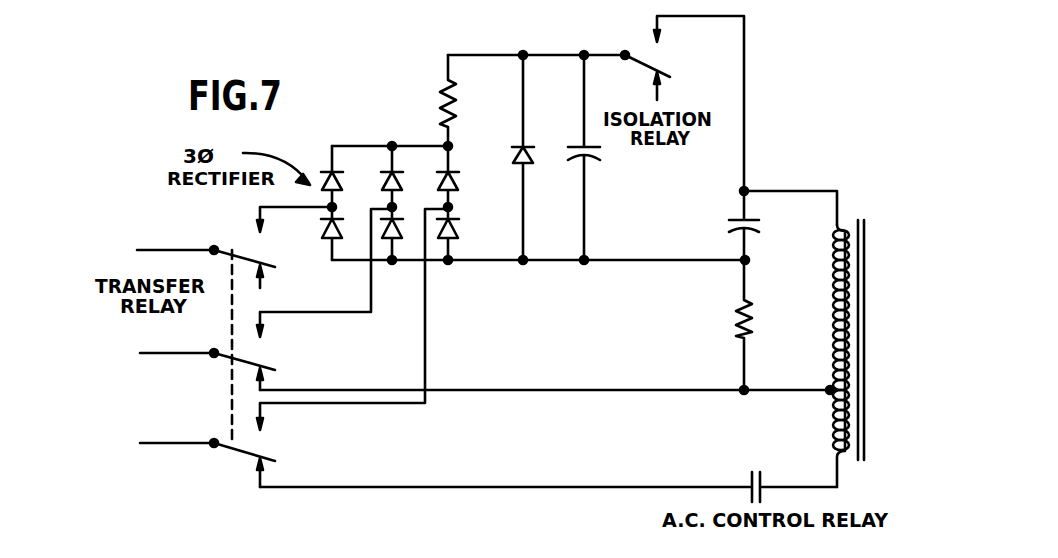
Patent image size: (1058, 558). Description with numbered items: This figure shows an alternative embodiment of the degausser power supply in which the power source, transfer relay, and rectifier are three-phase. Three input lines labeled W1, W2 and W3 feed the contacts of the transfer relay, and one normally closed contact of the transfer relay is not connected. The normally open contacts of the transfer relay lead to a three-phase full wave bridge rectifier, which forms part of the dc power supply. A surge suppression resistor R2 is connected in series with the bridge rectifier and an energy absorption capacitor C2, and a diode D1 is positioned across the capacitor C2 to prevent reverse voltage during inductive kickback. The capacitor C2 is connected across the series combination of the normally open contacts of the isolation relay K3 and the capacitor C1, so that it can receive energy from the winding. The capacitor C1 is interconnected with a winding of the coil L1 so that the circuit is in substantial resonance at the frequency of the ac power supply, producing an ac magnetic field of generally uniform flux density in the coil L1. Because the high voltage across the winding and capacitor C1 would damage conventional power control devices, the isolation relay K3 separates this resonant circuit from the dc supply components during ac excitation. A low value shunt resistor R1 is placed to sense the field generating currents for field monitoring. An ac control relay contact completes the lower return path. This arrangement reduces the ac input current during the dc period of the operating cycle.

The surge suppression resistor R2 is at (449, 103).
The diode D1 is at (528, 157).
The energy absorption capacitor C2 is at (599, 157).
The isolation relay K3 is at (651, 52).
The capacitor C1 is at (759, 230).
The shunt resistor R1 is at (755, 318).
The coil L1 is at (866, 381).
The transfer relay contact W1 is at (205, 453).
The transfer relay contact W2 is at (205, 359).
The transfer relay contact W3 is at (200, 255).